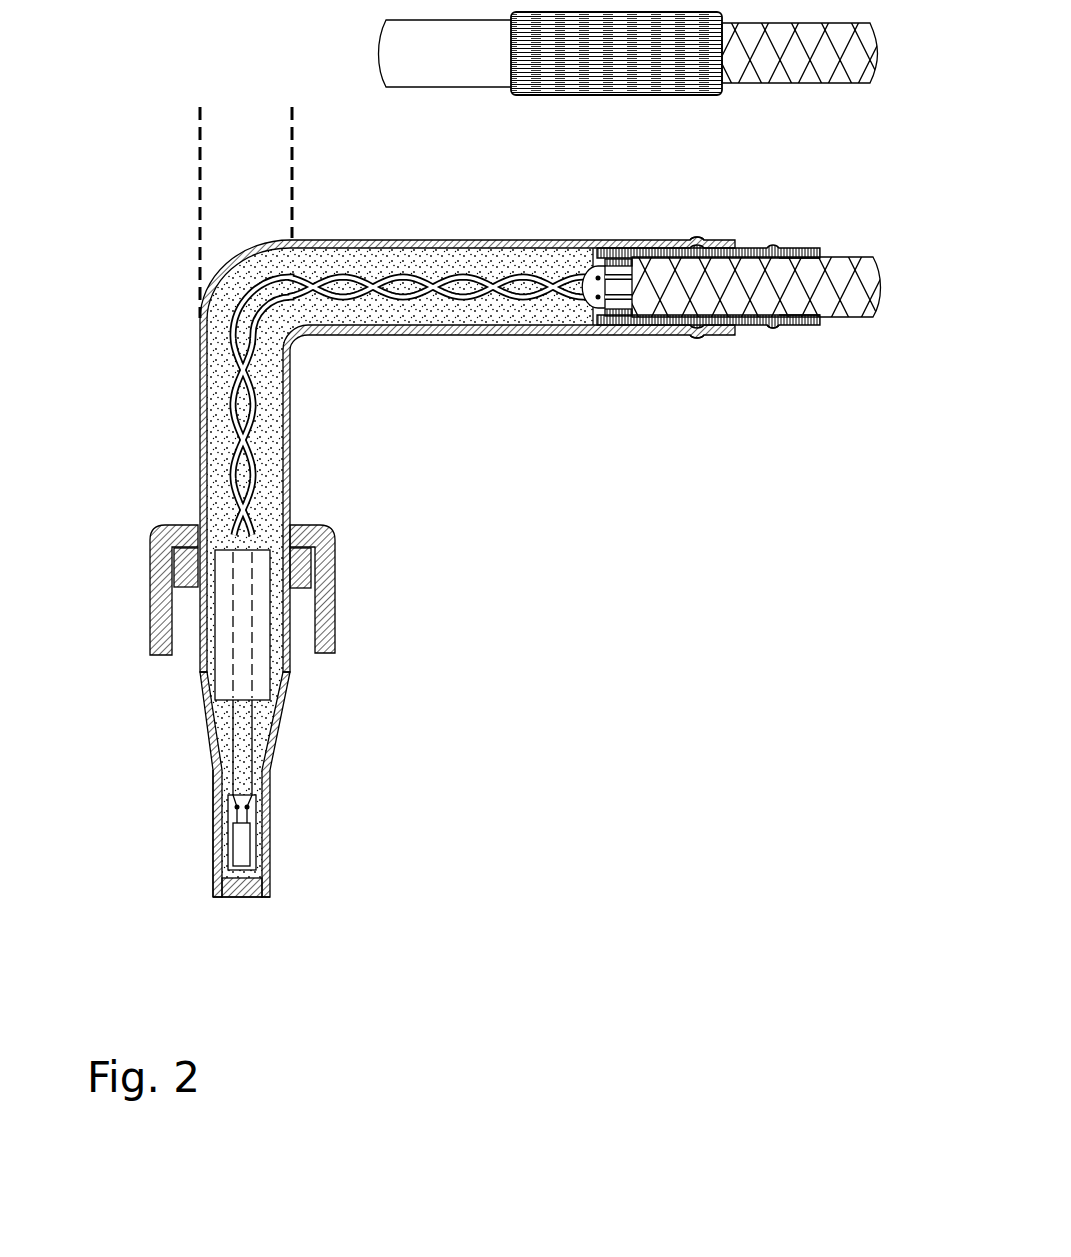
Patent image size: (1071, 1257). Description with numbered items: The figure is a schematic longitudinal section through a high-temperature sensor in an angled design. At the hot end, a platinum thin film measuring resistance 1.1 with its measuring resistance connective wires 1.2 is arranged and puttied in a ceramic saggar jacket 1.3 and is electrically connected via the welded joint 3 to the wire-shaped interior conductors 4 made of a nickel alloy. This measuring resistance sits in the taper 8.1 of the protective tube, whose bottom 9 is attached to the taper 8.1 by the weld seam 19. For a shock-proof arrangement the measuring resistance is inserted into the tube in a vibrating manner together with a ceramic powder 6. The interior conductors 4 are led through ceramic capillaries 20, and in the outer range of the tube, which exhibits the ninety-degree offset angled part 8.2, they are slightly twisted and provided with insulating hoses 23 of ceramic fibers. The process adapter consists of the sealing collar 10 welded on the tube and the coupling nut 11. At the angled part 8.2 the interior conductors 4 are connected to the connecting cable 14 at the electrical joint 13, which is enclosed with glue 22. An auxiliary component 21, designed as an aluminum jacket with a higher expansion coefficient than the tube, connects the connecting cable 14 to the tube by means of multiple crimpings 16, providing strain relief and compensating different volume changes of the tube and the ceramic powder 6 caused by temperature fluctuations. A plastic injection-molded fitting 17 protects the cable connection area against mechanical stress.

The platinum thin film measuring resistance 1.1 is at (243, 858).
The measuring resistance connective wires 1.2 is at (250, 814).
The ceramic saggar jacket 1.3 is at (270, 836).
The welded joint 3 is at (265, 816).
The wire-shaped interior conductors 4 is at (262, 716).
The ceramic powder 6 is at (263, 503).
The taper 8.1 is at (218, 841).
The angled part 8.2 is at (438, 84).
The bottom 9 is at (232, 897).
The sealing collar 10 is at (300, 577).
The coupling nut 11 is at (322, 651).
The electrical joint 13 is at (586, 250).
The connecting cable 14 is at (838, 62).
The crimpings 16 is at (772, 318).
The plastic injection-molded fitting 17 is at (590, 82).
The weld seam 19 is at (270, 897).
The ceramic capillaries 20 is at (217, 656).
The auxiliary component 21 is at (803, 322).
The glue 22 is at (587, 312).
The insulating hoses 23 is at (470, 275).